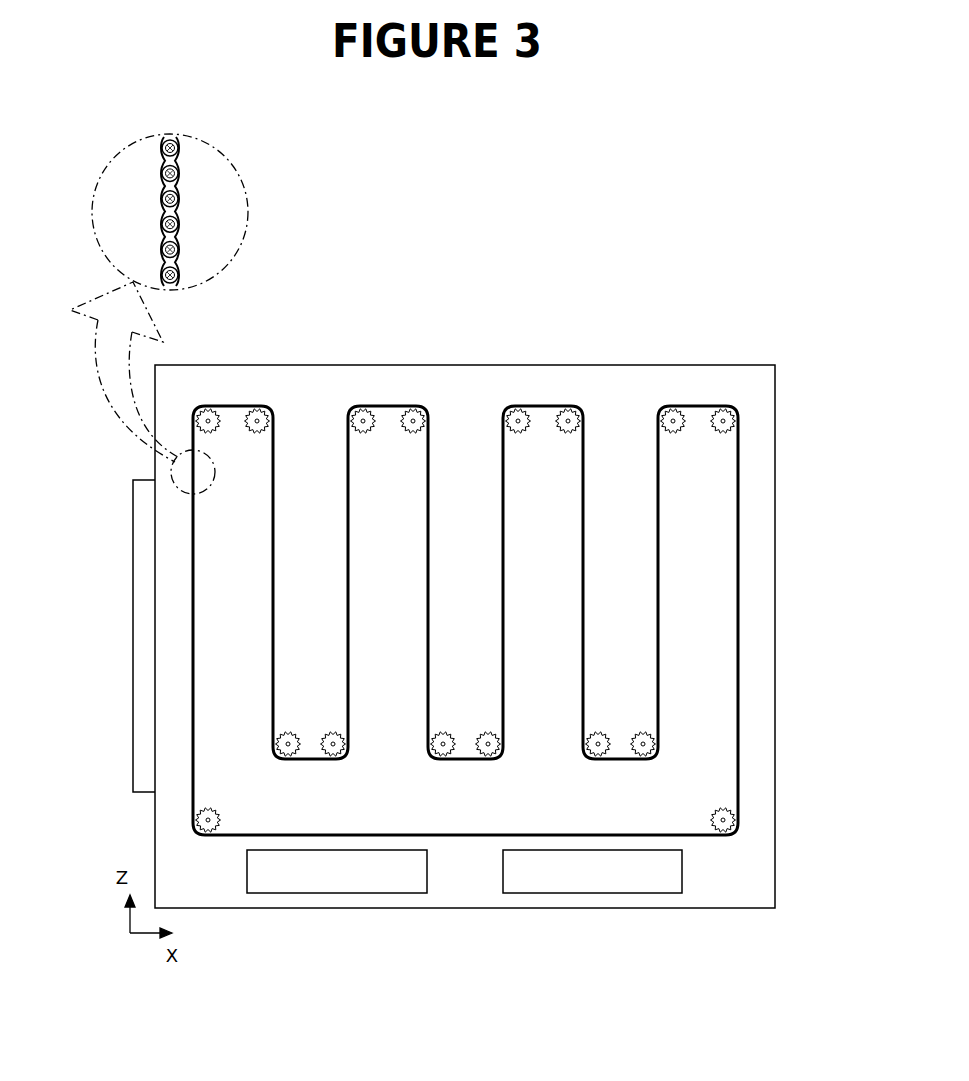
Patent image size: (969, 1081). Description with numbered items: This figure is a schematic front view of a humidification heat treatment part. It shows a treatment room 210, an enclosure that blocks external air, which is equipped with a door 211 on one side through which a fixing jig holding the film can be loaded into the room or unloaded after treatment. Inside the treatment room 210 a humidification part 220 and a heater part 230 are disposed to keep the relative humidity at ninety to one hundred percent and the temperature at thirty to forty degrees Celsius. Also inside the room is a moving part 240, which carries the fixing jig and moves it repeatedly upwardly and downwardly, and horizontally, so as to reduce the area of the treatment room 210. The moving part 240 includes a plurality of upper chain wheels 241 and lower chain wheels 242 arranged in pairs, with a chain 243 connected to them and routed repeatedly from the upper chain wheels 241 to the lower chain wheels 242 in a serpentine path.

The treatment room 210 is at (277, 363).
The door 211 is at (146, 566).
The humidification part 220 is at (382, 893).
The heater part 230 is at (637, 893).
The moving part 240 is at (524, 561).
The upper chain wheels 241 is at (568, 408).
The lower chain wheels 242 is at (652, 742).
The chain 243 is at (660, 542).